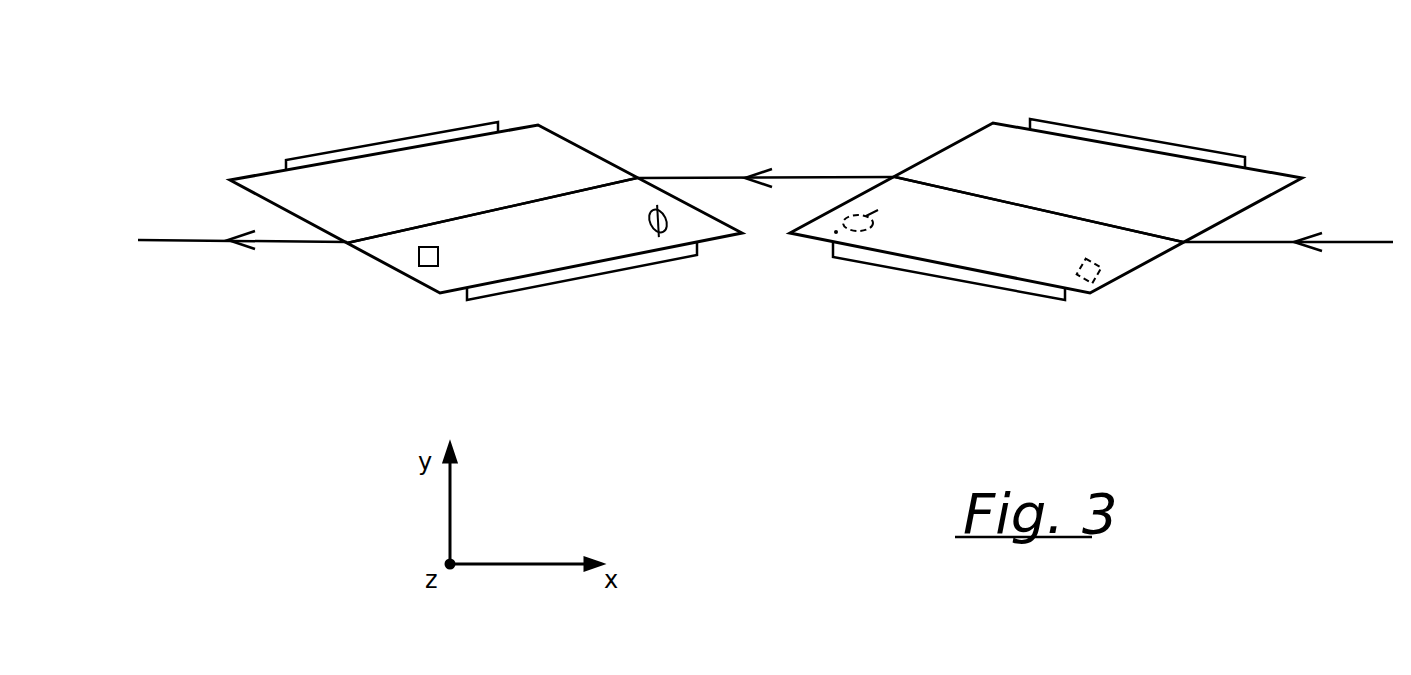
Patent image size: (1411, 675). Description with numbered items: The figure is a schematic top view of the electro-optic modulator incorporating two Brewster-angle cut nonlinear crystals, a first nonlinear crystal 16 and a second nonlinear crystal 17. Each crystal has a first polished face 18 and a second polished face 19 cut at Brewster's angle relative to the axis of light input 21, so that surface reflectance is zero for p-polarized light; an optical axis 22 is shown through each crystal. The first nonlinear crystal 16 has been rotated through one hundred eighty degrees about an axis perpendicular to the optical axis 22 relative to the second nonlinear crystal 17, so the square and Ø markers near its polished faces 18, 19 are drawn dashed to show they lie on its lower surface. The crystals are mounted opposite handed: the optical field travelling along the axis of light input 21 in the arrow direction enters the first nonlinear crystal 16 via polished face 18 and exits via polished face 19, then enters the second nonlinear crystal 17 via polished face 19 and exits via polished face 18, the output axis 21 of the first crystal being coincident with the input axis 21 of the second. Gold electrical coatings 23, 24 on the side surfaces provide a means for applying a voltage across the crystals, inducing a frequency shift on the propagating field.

The first nonlinear crystal 16 is at (1137, 175).
The second nonlinear crystal 17 is at (415, 160).
The first polished face 18 is at (395, 275).
The second polished face 19 is at (572, 140).
The axis of light input 21 is at (170, 240).
The optical axis 22 is at (517, 207).
The electrical coating 23 is at (550, 283).
The electrical coating 24 is at (302, 153).